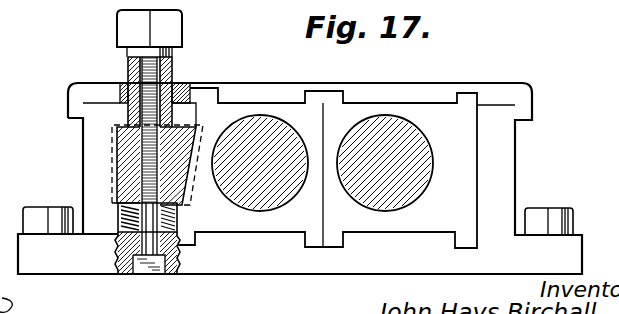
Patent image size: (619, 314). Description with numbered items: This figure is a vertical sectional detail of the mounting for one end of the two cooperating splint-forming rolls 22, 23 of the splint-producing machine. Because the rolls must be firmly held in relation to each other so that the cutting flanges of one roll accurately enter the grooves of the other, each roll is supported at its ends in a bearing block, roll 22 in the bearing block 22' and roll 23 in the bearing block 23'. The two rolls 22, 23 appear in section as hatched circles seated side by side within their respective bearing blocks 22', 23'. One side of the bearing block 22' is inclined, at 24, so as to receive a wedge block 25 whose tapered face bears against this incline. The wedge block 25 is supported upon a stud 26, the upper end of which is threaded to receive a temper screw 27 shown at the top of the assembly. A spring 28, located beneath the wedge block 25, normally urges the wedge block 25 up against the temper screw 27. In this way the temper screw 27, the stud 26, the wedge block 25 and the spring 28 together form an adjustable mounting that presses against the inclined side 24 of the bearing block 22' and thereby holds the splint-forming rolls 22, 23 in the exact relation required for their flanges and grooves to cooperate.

The splint-forming roll 22 is at (260, 131).
The bearing block 22' is at (277, 81).
The splint-forming roll 23 is at (385, 131).
The bearing block 23' is at (411, 81).
The inclined side 24 is at (196, 127).
The wedge block 25 is at (117, 164).
The stud 26 is at (147, 268).
The temper screw 27 is at (128, 70).
The spring 28 is at (125, 217).